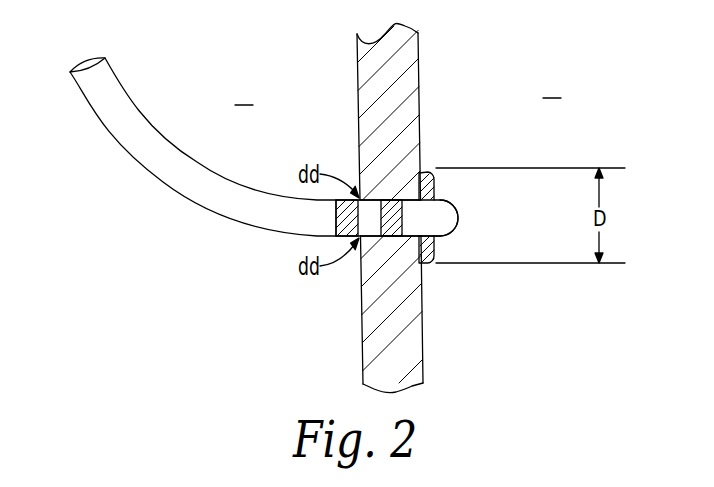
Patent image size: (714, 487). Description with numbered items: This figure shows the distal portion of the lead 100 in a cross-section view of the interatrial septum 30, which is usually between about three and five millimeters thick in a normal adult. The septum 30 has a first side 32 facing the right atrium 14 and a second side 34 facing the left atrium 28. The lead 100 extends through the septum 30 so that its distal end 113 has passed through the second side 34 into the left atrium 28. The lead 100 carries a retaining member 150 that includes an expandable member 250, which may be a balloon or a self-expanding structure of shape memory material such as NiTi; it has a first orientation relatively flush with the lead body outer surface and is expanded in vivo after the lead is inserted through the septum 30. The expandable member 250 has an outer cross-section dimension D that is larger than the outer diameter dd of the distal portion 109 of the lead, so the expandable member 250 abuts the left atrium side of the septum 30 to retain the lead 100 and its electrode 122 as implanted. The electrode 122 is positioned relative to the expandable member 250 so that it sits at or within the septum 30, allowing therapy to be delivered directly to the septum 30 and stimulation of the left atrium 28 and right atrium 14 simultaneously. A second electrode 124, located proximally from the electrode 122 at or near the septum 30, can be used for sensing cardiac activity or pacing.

The right atrium 14 is at (246, 94).
The left atrium 28 is at (554, 87).
The interatrial septum 30 is at (405, 80).
The first side 32 is at (357, 127).
The second side 34 is at (418, 117).
The lead 100 is at (144, 165).
The distal portion 109 is at (395, 237).
The distal end 113 is at (446, 216).
The electrode 122 is at (446, 232).
The second electrode 124 is at (334, 226).
The retaining member 150 is at (445, 167).
The expandable member 250 is at (437, 185).